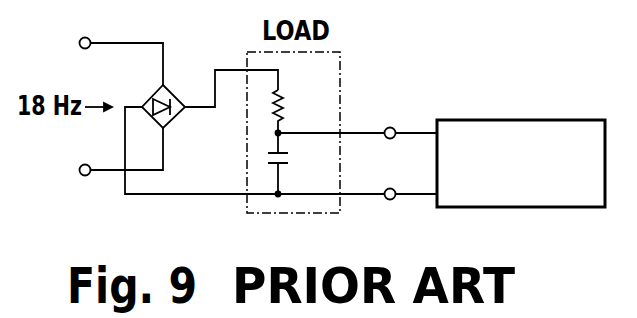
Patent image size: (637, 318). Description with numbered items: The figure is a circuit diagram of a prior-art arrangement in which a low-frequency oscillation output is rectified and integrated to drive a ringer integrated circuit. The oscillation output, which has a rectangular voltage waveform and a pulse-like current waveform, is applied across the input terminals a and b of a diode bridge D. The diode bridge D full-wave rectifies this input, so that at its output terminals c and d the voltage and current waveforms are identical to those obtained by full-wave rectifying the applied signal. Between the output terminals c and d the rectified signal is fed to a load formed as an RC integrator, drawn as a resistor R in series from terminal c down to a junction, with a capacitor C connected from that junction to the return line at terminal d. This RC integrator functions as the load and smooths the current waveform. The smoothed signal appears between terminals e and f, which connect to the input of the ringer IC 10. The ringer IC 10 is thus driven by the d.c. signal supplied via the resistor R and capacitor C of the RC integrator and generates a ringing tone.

The ringer IC 10 is at (507, 120).
The terminal a is at (110, 56).
The terminal b is at (110, 155).
The output terminal c is at (231, 74).
The output terminal d is at (255, 152).
The terminal e is at (357, 118).
The terminal f is at (411, 180).
The diode bridge D is at (167, 116).
The resistor R is at (290, 121).
The capacitor C is at (288, 170).